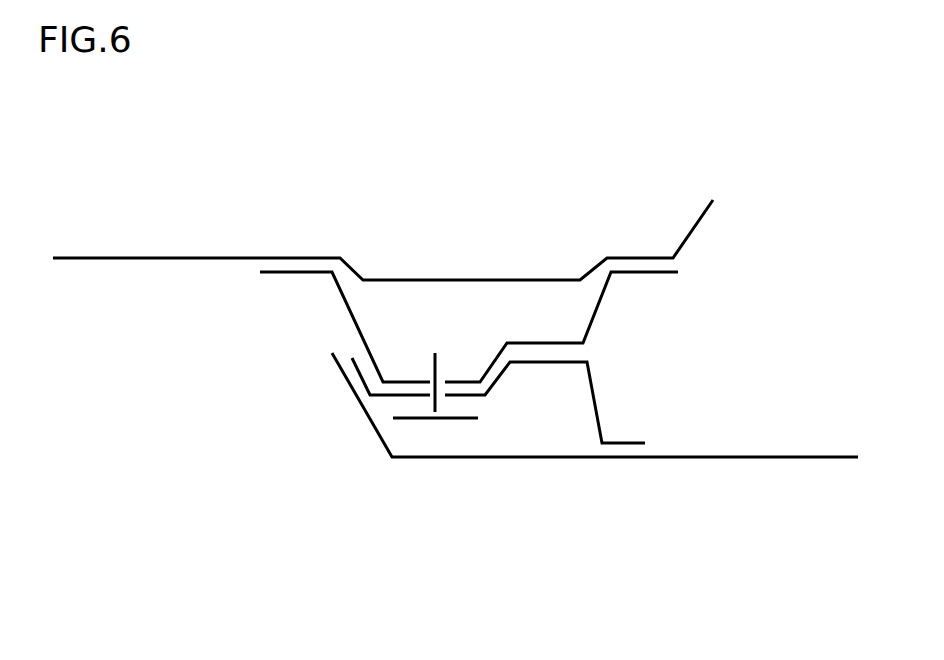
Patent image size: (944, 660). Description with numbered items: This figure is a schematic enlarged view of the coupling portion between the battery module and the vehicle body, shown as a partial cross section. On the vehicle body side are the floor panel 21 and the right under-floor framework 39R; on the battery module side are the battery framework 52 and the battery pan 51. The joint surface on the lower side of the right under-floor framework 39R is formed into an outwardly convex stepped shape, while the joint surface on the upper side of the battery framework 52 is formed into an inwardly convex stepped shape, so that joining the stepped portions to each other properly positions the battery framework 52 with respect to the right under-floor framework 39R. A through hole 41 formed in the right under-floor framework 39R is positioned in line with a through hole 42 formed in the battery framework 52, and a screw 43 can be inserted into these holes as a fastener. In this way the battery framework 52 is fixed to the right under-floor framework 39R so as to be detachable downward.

The floor panel 21 is at (182, 258).
The right under-floor framework 39R is at (353, 307).
The through hole 41 is at (451, 360).
The through hole 42 is at (445, 412).
The screw 43 is at (417, 420).
The battery pan 51 is at (713, 455).
The battery framework 52 is at (595, 402).